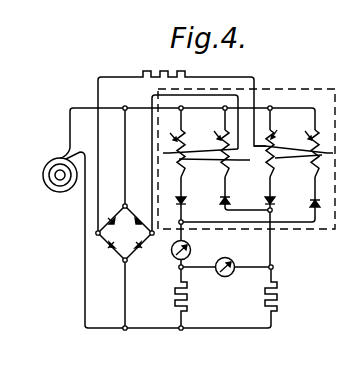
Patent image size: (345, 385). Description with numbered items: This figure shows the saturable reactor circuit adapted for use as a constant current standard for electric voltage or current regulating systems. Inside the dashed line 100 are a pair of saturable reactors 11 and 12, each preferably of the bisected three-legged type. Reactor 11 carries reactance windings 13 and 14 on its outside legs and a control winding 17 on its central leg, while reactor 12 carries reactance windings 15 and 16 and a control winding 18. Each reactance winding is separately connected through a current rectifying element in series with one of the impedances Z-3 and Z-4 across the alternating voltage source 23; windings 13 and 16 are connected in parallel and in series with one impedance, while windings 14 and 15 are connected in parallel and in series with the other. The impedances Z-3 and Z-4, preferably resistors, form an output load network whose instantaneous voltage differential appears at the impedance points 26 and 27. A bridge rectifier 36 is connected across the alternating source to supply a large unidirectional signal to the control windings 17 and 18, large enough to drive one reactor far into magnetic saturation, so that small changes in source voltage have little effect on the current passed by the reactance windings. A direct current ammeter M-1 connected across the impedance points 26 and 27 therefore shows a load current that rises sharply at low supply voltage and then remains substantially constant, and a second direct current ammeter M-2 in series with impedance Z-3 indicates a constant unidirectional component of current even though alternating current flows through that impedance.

The dashed line 100 is at (303, 89).
The reactance winding 13 is at (174, 147).
The reactance winding 14 is at (218, 146).
The reactance winding 15 is at (277, 146).
The reactance winding 16 is at (308, 146).
The control winding 17 is at (203, 160).
The control winding 18 is at (293, 157).
The saturable reactor 11 is at (213, 215).
The saturable reactor 12 is at (303, 214).
The alternating voltage source 23 is at (43, 175).
The bridge rectifier 36 is at (125, 233).
The direct current ammeter M-2 is at (191, 250).
The direct current ammeter M-1 is at (225, 277).
The impedance point 26 is at (179, 267).
The impedance point 27 is at (273, 266).
The impedance Z-3 is at (175, 298).
The impedance Z-4 is at (279, 294).